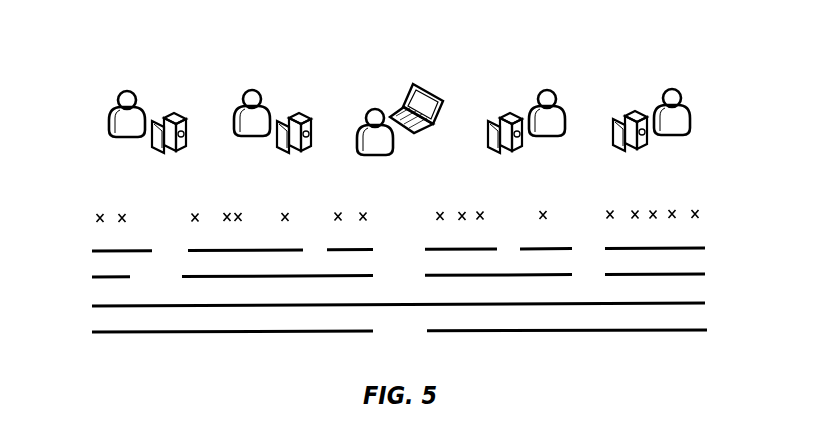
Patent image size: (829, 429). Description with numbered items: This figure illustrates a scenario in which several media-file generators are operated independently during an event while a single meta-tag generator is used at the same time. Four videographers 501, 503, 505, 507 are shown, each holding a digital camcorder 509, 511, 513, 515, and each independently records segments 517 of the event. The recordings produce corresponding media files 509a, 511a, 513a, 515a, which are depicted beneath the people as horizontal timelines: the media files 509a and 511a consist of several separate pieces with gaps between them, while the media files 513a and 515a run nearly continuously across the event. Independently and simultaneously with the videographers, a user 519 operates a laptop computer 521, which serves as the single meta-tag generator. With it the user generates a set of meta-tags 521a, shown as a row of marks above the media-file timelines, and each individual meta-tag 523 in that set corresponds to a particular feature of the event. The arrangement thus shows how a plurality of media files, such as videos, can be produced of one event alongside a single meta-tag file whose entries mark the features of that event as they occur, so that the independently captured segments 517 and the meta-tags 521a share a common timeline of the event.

The videographer 501 is at (116, 97).
The videographer 503 is at (241, 96).
The videographer 505 is at (538, 90).
The videographer 507 is at (666, 89).
The digital camcorder 509 is at (185, 146).
The digital camcorder 511 is at (310, 146).
The digital camcorder 513 is at (522, 146).
The digital camcorder 515 is at (647, 145).
The segments 517 is at (217, 337).
The user 519 is at (367, 109).
The laptop computer 521 is at (414, 86).
The set of meta-tags 521a is at (364, 214).
The media file 509a is at (367, 248).
The media file 511a is at (367, 275).
The media file 513a is at (367, 303).
The media file 515a is at (368, 329).
The meta-tag 523 is at (99, 195).